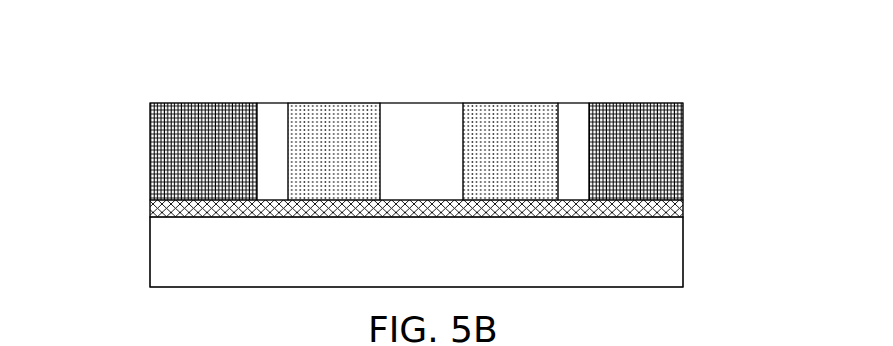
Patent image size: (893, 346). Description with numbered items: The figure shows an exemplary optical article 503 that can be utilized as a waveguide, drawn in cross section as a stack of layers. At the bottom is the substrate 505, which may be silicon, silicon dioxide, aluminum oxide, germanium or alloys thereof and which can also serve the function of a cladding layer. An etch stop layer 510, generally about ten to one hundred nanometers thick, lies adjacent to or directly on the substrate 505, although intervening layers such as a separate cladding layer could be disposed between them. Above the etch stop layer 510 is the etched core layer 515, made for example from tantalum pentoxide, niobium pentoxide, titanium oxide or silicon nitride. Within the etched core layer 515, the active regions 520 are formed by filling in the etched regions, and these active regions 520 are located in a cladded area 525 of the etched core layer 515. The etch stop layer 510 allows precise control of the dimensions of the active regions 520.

The article 503 is at (411, 156).
The substrate 505 is at (447, 258).
The etch stop layer 510 is at (154, 203).
The etched core layer 515 is at (220, 100).
The active region 520 is at (487, 100).
The cladded area 525 is at (438, 100).